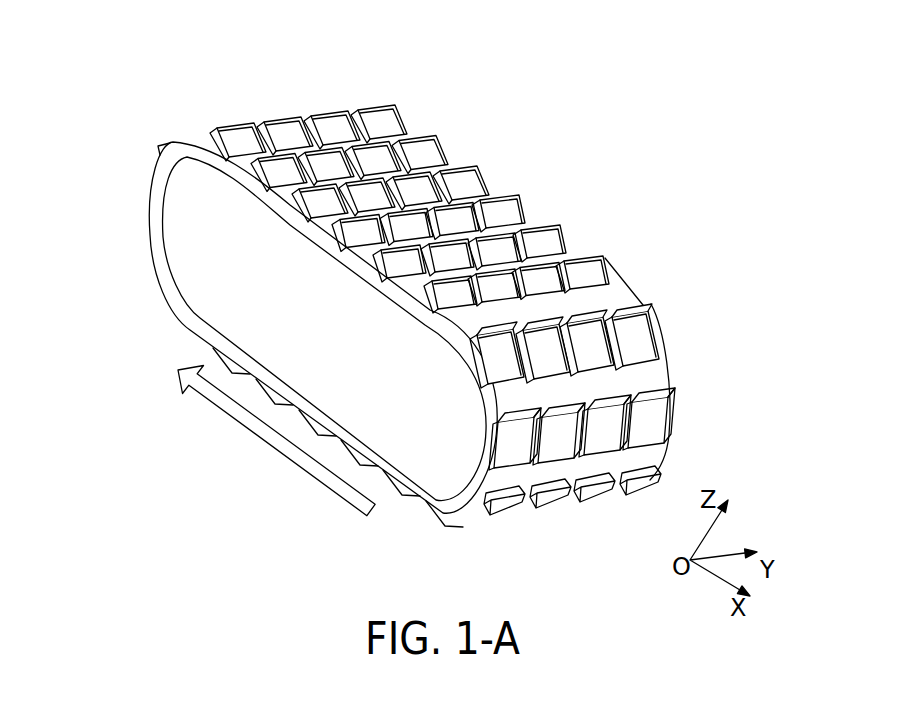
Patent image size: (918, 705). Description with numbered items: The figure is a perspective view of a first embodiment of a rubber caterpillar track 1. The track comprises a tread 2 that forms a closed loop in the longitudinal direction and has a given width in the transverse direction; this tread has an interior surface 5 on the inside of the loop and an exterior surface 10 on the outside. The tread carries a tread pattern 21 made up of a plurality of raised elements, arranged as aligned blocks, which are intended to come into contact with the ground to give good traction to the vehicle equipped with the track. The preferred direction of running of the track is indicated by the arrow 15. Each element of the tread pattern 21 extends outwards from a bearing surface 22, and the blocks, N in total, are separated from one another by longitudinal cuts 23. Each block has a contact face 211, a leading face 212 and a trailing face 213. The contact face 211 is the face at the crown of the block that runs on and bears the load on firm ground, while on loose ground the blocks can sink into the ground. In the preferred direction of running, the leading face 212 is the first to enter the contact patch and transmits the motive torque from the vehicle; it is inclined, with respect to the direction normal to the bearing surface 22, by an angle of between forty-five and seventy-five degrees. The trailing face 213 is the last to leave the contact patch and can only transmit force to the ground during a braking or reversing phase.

The rubber caterpillar track 1 is at (406, 296).
The tread 2 is at (443, 122).
The interior surface 5 is at (177, 325).
The exterior surface 10 is at (136, 239).
The arrow indicating preferred direction of running 15 is at (276, 441).
The tread pattern 21 is at (490, 172).
The bearing surface 22 is at (671, 445).
The longitudinal cuts 23 is at (411, 263).
The contact face 211 is at (521, 423).
The leading face 212 is at (505, 208).
The trailing face 213 is at (643, 478).